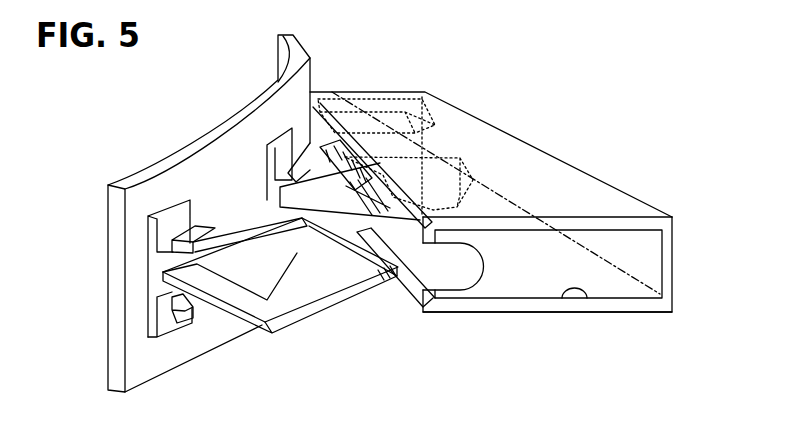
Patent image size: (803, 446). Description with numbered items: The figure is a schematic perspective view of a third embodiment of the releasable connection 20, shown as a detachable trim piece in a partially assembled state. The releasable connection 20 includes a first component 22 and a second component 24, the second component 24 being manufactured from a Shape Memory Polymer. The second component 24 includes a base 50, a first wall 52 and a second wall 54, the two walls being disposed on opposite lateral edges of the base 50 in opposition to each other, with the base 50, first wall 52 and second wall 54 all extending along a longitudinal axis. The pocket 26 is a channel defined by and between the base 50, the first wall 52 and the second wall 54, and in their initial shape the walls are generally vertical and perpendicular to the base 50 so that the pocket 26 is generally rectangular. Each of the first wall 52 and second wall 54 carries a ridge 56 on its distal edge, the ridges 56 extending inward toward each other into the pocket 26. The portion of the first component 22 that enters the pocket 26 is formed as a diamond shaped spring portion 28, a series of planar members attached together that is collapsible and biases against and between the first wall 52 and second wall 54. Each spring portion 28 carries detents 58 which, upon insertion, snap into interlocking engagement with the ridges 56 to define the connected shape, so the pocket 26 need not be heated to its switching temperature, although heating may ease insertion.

The releasable connection 20 is at (372, 326).
The first component 22 is at (225, 131).
The second component 24 is at (495, 130).
The pocket 26 is at (589, 296).
The diamond shaped spring portion 28 is at (254, 332).
The base 50 is at (673, 270).
The first wall 52 is at (573, 219).
The second wall 54 is at (530, 310).
The ridge 56 is at (440, 237).
The detent 58 is at (200, 226).